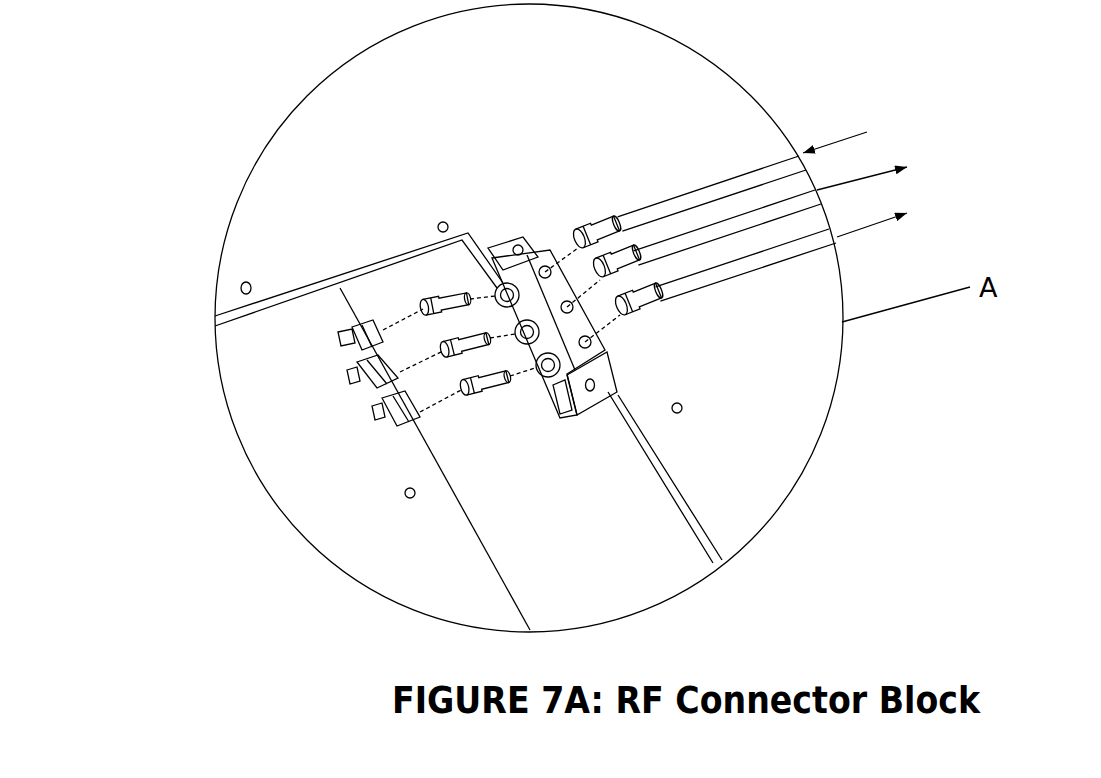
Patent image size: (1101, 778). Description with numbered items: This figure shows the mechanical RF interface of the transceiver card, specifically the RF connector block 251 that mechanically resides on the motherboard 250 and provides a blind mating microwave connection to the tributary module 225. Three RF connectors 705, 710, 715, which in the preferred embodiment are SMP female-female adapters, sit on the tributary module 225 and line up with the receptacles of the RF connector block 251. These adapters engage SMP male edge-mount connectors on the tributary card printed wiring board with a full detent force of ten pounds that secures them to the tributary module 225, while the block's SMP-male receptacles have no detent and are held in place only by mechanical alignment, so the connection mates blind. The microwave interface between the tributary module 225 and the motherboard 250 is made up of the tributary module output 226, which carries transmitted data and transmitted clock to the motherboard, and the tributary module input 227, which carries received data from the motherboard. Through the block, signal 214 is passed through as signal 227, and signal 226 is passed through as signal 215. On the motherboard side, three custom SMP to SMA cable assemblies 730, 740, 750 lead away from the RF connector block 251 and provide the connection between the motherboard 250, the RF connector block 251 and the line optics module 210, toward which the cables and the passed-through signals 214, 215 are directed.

The line optics module 210 is at (972, 60).
The signal 214 is at (865, 132).
The signal 215 is at (901, 200).
The tributary module 225 is at (468, 426).
The tributary module output 226 is at (380, 421).
The tributary module input 227 is at (352, 334).
The motherboard 250 is at (546, 259).
The RF connector block 251 is at (603, 350).
The RF connector 705 is at (437, 302).
The RF connector 710 is at (457, 353).
The RF connector 715 is at (506, 389).
The SMP to SMA cable assembly 730 is at (675, 190).
The SMP to SMA cable assembly 740 is at (697, 234).
The SMP to SMA cable assembly 750 is at (677, 288).